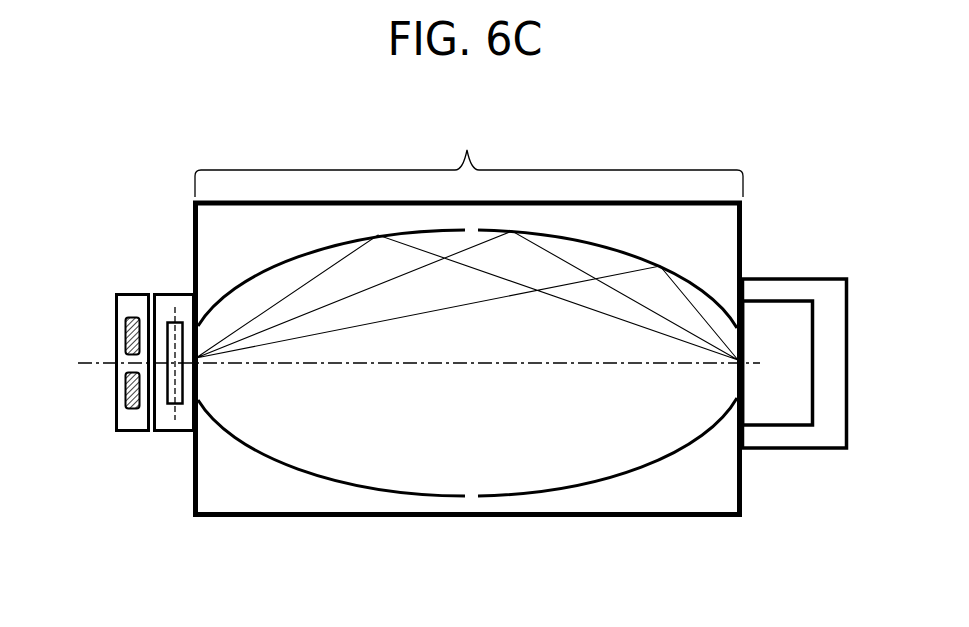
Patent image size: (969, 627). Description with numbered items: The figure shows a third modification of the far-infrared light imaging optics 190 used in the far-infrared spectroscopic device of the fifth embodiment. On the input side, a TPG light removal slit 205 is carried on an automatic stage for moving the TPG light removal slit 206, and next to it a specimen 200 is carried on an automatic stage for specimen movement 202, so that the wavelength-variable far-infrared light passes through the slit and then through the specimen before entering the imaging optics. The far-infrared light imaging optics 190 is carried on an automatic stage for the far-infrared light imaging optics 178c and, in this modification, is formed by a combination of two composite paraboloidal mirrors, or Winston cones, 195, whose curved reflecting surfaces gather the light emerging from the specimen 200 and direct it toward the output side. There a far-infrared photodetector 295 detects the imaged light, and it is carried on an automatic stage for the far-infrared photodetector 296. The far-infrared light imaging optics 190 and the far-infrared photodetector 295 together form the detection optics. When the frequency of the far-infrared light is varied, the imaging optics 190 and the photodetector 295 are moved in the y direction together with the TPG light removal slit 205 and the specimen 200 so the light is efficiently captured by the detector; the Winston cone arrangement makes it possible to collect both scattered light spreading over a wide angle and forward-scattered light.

The automatic stage for the far-infrared light imaging optics 178c is at (710, 517).
The far-infrared light imaging optics 190 is at (469, 155).
The composite paraboloidal mirror (Winston cone) 195 is at (323, 482).
The specimen 200 is at (172, 405).
The automatic stage for specimen movement 202 is at (177, 292).
The TPG light removal slit 205 is at (127, 405).
The automatic stage for moving the TPG light removal slit 206 is at (128, 292).
The far-infrared photodetector 295 is at (793, 300).
The automatic stage for the far-infrared photodetector 296 is at (827, 452).